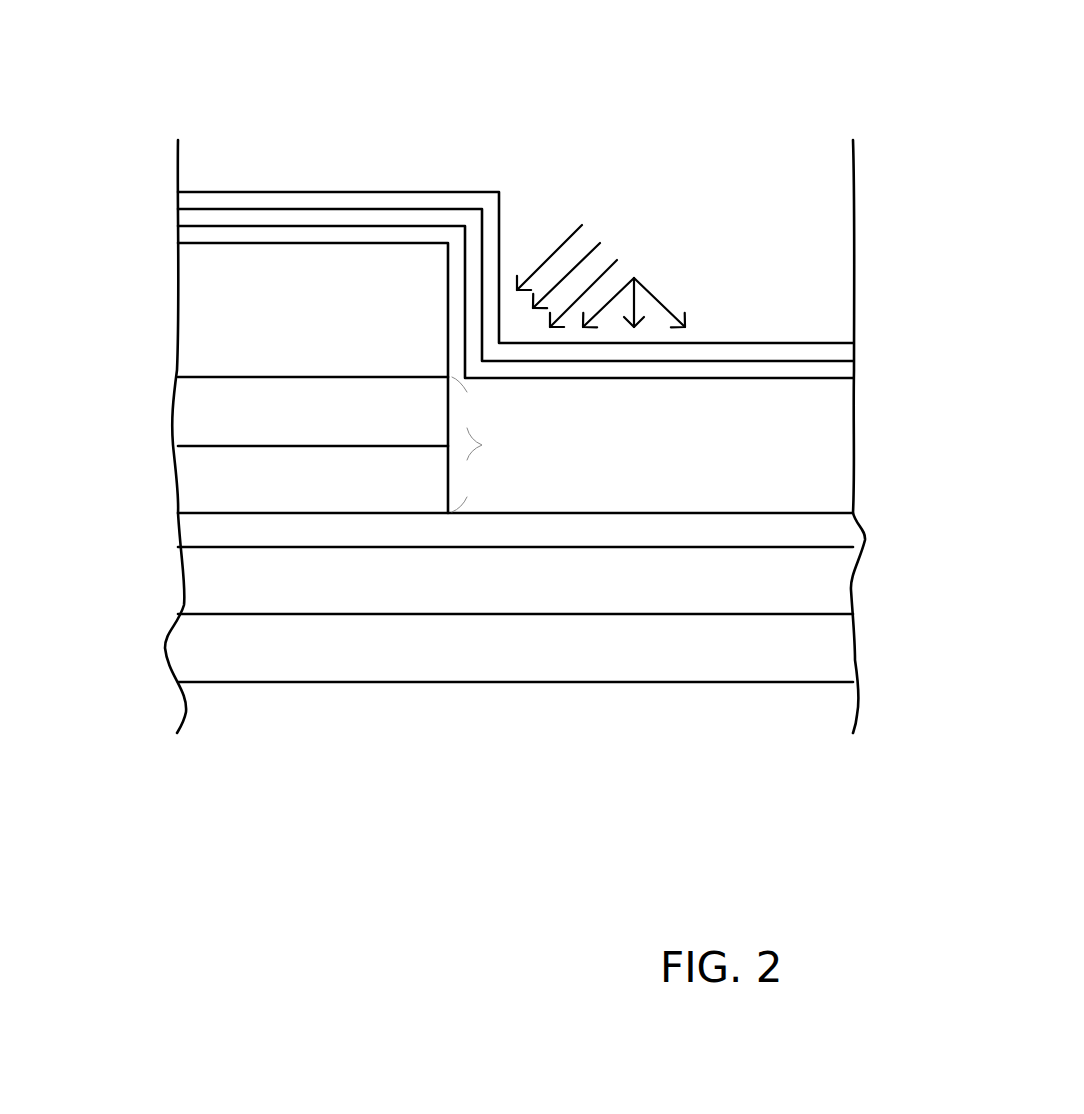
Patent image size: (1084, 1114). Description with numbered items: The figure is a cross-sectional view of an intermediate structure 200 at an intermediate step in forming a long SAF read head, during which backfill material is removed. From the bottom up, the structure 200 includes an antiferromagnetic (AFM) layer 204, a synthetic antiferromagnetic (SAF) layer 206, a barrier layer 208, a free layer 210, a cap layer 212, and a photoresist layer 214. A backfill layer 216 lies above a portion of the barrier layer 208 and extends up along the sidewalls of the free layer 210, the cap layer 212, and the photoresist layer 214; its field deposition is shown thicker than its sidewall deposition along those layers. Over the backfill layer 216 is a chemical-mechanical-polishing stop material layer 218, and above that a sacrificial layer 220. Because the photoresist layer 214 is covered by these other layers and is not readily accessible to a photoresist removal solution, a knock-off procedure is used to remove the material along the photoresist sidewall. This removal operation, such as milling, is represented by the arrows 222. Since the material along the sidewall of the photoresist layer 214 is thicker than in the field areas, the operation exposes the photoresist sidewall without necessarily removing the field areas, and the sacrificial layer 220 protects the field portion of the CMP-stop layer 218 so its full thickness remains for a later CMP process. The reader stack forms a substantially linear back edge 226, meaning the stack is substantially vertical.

The intermediate structure 200 is at (478, 100).
The antiferromagnetic (AFM) layer 204 is at (837, 647).
The synthetic antiferromagnetic (SAF) layer 206 is at (837, 580).
The barrier layer 208 is at (837, 525).
The free layer 210 is at (195, 479).
The cap layer 212 is at (195, 412).
The photoresist layer 214 is at (195, 328).
The backfill layer 216 is at (838, 410).
The chemical-mechanical-polishing stop material layer 218 is at (838, 369).
The sacrificial layer 220 is at (847, 352).
The arrows 222 is at (601, 271).
The substantially linear back edge 226 is at (491, 444).